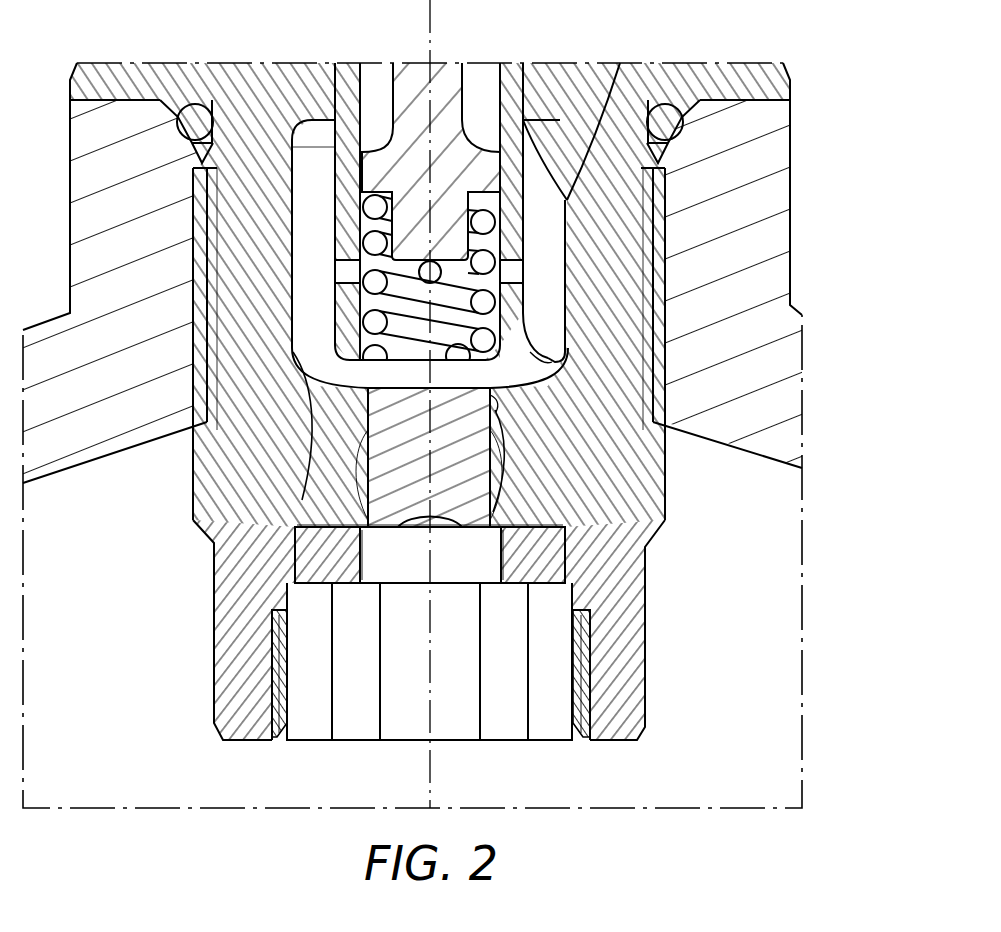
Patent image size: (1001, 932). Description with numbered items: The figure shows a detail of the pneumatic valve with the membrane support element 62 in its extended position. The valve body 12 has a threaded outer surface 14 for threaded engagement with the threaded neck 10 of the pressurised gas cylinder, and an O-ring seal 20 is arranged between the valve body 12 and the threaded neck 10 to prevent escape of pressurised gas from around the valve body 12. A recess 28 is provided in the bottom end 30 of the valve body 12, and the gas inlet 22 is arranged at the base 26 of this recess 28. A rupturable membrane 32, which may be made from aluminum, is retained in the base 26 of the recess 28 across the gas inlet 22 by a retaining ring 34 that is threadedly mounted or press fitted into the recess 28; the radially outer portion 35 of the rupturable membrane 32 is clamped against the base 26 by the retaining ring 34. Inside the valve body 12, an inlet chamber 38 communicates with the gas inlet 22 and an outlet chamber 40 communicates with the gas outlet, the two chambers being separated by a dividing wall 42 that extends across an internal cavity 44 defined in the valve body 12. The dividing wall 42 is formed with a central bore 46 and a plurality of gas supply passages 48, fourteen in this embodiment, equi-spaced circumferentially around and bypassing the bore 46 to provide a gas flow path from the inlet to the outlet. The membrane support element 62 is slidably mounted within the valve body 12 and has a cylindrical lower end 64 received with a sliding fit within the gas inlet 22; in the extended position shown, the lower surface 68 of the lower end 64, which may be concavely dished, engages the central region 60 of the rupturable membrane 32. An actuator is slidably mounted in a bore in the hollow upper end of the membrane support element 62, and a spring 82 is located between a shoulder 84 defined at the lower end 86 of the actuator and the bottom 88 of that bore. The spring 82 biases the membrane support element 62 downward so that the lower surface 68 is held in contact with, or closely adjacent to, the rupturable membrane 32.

The threaded neck 10 is at (790, 363).
The valve body 12 is at (255, 92).
The threaded outer surface 14 is at (662, 203).
The O-ring seal 20 is at (665, 106).
The gas inlet 22 is at (452, 660).
The base 26 is at (338, 528).
The recess 28 is at (505, 727).
The bottom end 30 is at (620, 703).
The rupturable membrane 32 is at (474, 527).
The retaining ring 34 is at (550, 552).
The radially outer portion 35 is at (322, 525).
The inlet chamber 38 is at (360, 468).
The outlet chamber 40 is at (310, 277).
The dividing wall 42 is at (500, 413).
The internal cavity 44 is at (310, 182).
The central bore 46 is at (493, 395).
The gas supply passages 48 is at (530, 367).
The central region 60 is at (410, 527).
The membrane support element 62 is at (515, 302).
The cylindrical lower end 64 is at (470, 500).
The lower surface 68 is at (380, 527).
The spring 82 is at (340, 314).
The shoulder 84 is at (488, 150).
The lower end 86 is at (417, 143).
The bottom 88 is at (450, 357).